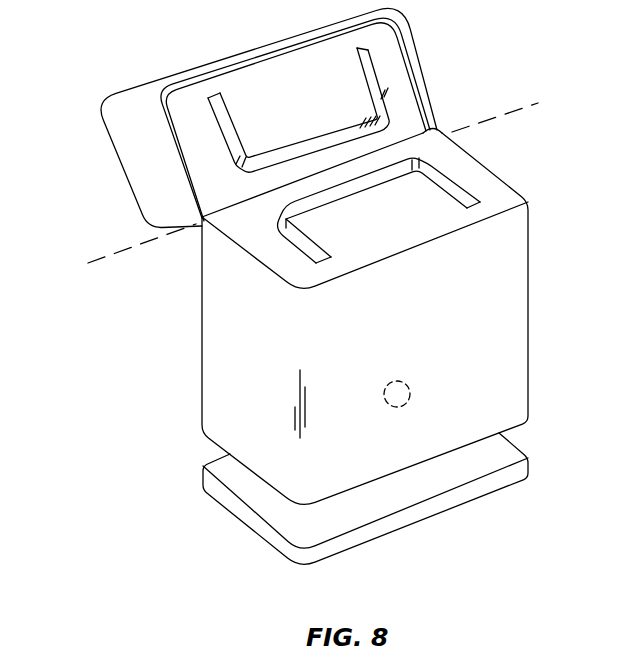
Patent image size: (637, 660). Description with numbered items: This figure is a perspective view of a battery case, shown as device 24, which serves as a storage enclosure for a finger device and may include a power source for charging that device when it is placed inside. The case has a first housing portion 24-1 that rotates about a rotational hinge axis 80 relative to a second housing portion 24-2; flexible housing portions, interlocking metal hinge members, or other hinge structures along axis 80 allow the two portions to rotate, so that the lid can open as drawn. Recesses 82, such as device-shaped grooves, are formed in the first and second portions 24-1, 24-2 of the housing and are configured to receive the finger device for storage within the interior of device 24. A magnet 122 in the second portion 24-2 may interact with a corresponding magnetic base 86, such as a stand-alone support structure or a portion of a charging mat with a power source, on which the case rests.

The device 24 is at (58, 97).
The first housing portion 24-1 is at (136, 100).
The second housing portion 24-2 is at (513, 293).
The rotational hinge axis 80 is at (528, 105).
The recesses 82 is at (373, 77).
The magnetic base 86 is at (373, 500).
The magnet 122 is at (415, 382).